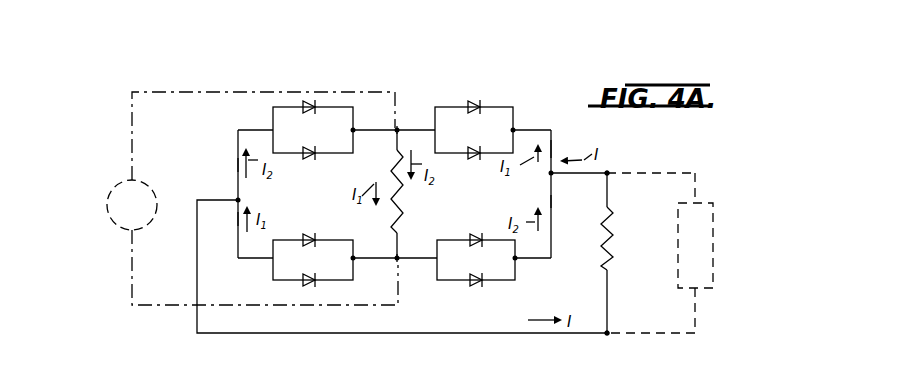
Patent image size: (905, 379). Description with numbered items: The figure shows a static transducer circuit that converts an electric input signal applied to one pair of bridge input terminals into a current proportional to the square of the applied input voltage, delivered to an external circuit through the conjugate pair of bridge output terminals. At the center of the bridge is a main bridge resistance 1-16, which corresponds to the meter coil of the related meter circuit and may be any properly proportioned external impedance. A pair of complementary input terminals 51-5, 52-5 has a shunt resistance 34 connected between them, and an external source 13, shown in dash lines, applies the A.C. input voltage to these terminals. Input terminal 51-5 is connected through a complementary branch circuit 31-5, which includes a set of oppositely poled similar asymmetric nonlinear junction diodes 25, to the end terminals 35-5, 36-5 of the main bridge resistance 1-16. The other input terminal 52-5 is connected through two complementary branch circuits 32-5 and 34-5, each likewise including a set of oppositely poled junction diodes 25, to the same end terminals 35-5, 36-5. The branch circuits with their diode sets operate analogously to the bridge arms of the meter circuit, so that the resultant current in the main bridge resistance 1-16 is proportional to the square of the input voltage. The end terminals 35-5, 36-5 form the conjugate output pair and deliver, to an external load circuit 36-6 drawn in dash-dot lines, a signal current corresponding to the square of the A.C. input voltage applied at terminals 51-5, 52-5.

The external load circuit 36-6 is at (112, 192).
The asymmetric nonlinear junction diodes 25 is at (318, 112).
The main bridge resistance 1-16 is at (405, 205).
The shunt resistance 34 is at (612, 251).
The external source 13 is at (716, 260).
The complementary branch circuit 34-5 is at (237, 164).
The complementary branch circuit 32-5 is at (237, 218).
The end terminal of main bridge resistance 35-5 is at (401, 128).
The end terminal of main bridge resistance 36-5 is at (402, 263).
The complementary branch circuit 31-5 is at (552, 153).
The bridge input terminal 51-5 is at (611, 171).
The bridge input terminal 52-5 is at (609, 336).